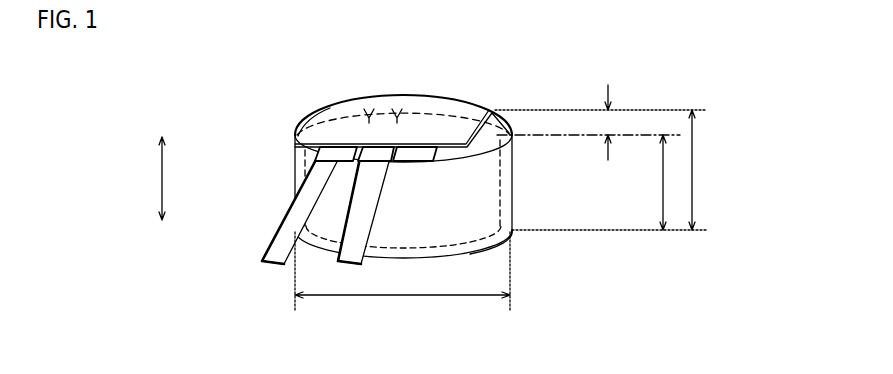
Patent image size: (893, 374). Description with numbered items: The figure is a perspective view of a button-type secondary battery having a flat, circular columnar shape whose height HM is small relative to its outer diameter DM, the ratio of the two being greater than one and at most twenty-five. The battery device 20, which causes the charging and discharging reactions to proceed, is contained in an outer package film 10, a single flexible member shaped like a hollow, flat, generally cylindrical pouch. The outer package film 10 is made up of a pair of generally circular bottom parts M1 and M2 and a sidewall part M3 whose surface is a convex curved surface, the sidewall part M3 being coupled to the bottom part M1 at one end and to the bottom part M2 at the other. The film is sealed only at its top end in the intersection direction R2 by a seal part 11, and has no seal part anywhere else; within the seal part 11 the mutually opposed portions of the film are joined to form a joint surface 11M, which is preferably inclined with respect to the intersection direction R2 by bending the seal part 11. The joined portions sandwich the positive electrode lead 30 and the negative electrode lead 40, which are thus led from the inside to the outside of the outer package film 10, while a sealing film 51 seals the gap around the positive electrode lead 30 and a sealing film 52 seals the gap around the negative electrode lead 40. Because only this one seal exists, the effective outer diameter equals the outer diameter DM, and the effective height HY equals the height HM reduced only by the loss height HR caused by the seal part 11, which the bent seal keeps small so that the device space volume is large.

The outer package film 10 is at (513, 167).
The battery device 20 is at (503, 214).
The seal part 11 is at (403, 110).
The joint surface 11M is at (368, 108).
The positive electrode lead 30 is at (283, 245).
The negative electrode lead 40 is at (380, 210).
The sealing film 51 is at (338, 152).
The sealing film 52 is at (417, 150).
The bottom part M1 is at (467, 102).
The bottom part M2 is at (493, 243).
The sidewall part M3 is at (298, 160).
The loss height HR is at (608, 118).
The effective height HY is at (663, 185).
The height HM is at (692, 170).
The intersection direction R2 is at (162, 180).
The outer diameter DM is at (400, 295).